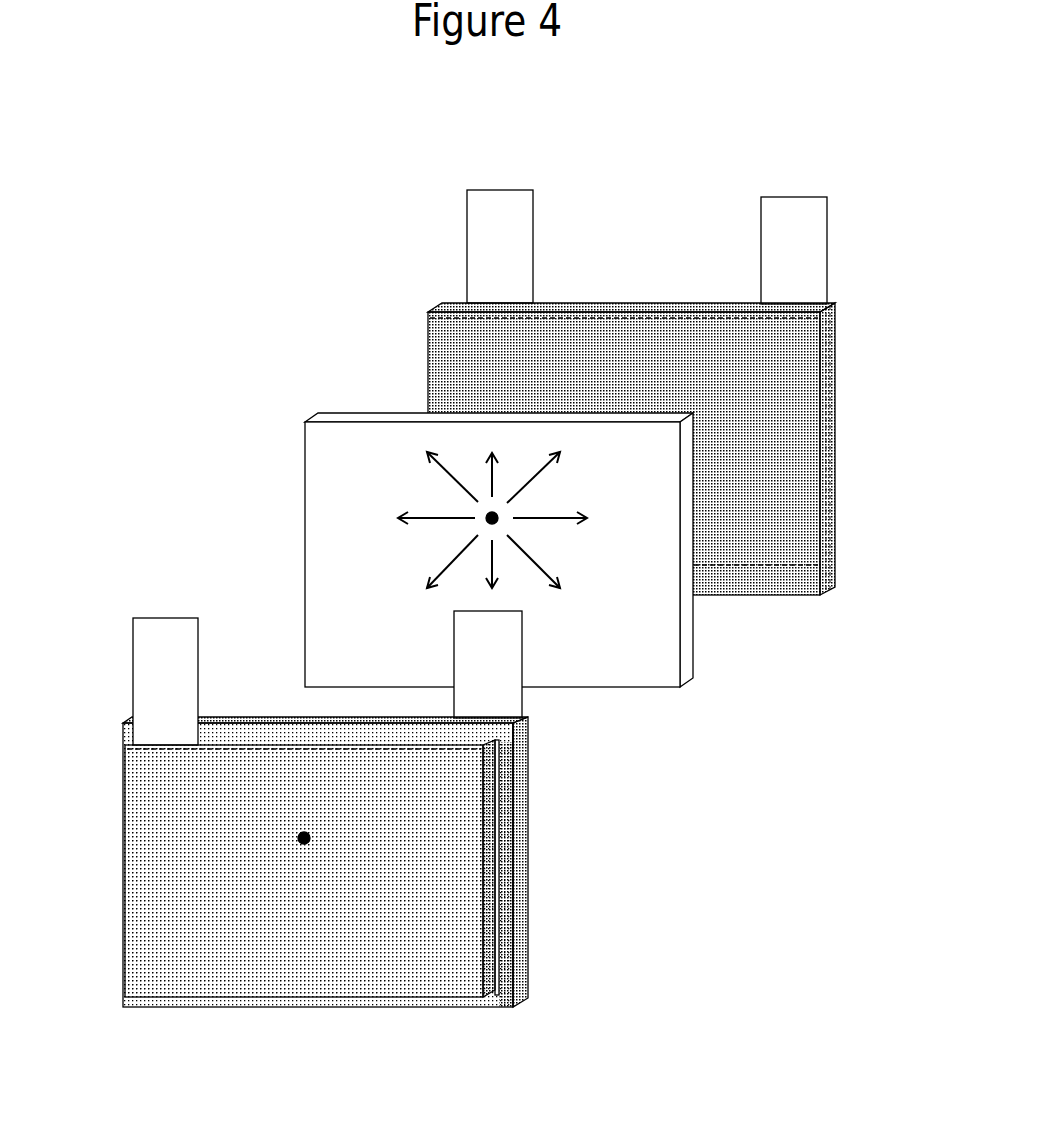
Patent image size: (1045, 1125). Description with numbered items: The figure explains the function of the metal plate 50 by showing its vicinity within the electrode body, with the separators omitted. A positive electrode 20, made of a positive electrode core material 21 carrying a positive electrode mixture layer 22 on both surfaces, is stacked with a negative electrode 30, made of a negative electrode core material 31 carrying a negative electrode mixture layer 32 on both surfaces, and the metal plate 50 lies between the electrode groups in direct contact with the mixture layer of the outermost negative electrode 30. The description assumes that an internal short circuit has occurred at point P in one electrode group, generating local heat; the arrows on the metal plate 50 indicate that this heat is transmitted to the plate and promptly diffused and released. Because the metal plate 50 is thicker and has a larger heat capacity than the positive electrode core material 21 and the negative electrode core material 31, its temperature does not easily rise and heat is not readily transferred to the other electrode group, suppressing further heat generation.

The positive electrode 20 is at (478, 190).
The positive electrode core material 21 is at (505, 1005).
The positive electrode mixture layer 22 is at (447, 1010).
The point P is at (304, 838).
The negative electrode 30 is at (836, 345).
The negative electrode core material 31 is at (523, 812).
The negative electrode mixture layer 32 is at (507, 953).
The metal plate 50 is at (660, 655).